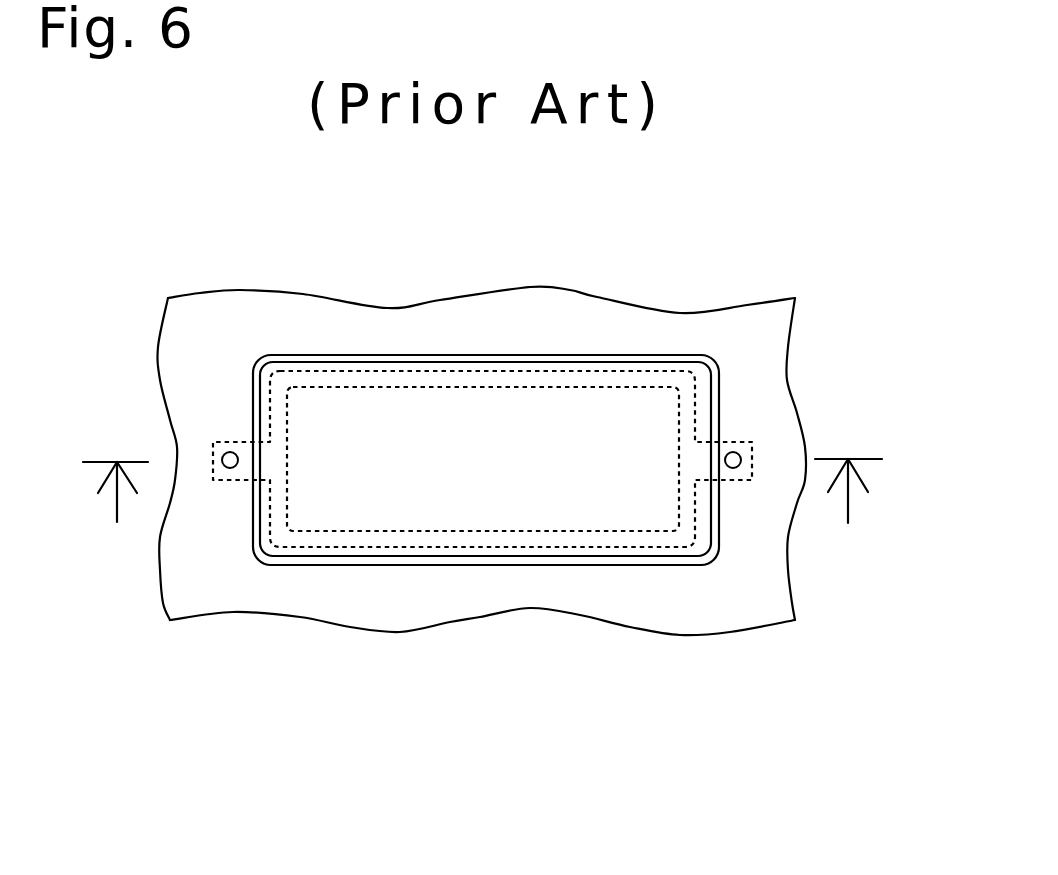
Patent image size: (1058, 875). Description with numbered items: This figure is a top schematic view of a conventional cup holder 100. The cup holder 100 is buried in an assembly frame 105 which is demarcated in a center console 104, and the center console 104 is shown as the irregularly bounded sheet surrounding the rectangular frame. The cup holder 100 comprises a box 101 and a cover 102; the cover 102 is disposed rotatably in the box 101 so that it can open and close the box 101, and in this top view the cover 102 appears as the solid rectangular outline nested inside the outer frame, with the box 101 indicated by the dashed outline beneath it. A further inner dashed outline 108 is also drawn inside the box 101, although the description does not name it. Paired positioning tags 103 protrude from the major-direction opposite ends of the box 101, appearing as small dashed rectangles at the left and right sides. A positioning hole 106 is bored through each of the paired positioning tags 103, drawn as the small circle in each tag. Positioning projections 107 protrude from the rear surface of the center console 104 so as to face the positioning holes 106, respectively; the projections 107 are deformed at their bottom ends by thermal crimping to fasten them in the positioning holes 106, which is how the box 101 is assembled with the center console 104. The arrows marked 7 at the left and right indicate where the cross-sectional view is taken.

The cup holder 100 is at (728, 233).
The box 101 is at (387, 548).
The cover 102 is at (576, 557).
The positioning tag 103 is at (735, 480).
The center console 104 is at (163, 583).
The assembly frame 105 is at (247, 502).
The positioning hole 106 is at (232, 452).
The positioning projection 107 is at (230, 460).
The inner dashed region 108 is at (488, 531).
The section arrows 7- 7 is at (482, 512).